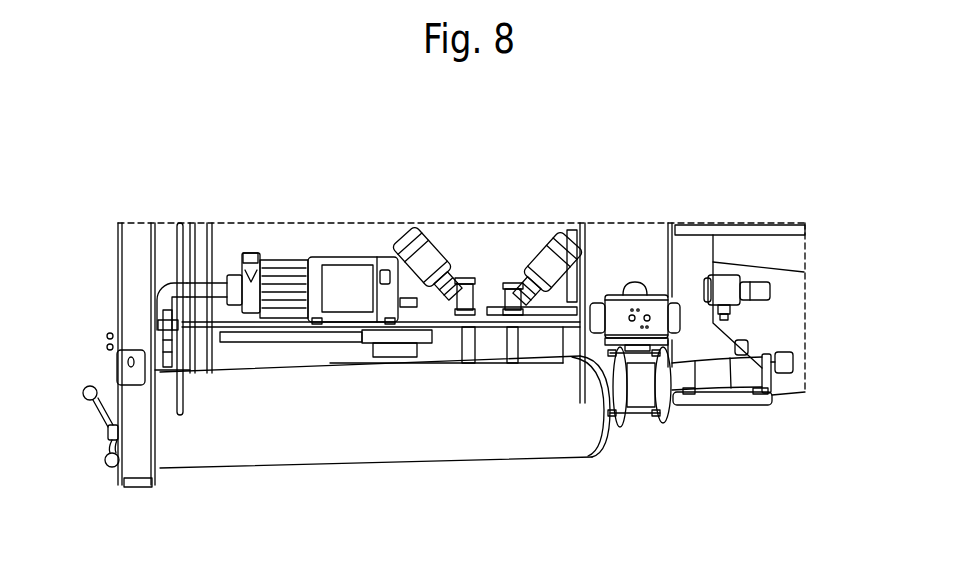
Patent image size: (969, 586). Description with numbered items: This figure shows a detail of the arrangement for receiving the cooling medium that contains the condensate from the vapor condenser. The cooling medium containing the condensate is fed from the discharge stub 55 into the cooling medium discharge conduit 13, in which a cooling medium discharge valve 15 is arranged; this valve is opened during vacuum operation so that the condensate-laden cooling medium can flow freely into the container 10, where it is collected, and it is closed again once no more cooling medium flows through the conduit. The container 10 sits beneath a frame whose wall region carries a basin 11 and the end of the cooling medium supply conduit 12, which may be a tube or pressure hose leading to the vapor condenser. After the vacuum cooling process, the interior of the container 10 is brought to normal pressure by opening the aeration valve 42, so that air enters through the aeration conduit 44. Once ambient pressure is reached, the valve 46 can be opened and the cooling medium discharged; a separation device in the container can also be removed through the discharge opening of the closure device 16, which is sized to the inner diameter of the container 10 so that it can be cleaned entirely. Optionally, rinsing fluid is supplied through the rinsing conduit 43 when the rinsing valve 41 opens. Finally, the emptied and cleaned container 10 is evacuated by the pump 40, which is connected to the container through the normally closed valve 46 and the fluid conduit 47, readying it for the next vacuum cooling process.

The container 10 is at (389, 440).
The basin 11 is at (788, 322).
The cooling medium supply conduit 12 is at (768, 288).
The cooling medium discharge conduit 13 is at (720, 395).
The cooling medium discharge valve 15 is at (645, 383).
The closure device 16 is at (110, 432).
The pump 40 is at (350, 290).
The rinsing valve 41 is at (430, 257).
The aeration valve 42 is at (543, 262).
The rinsing conduit 43 is at (462, 350).
The aeration conduit 44 is at (508, 350).
The valve 46 is at (163, 343).
The fluid conduit 47 is at (170, 288).
The discharge stub 55 is at (770, 387).